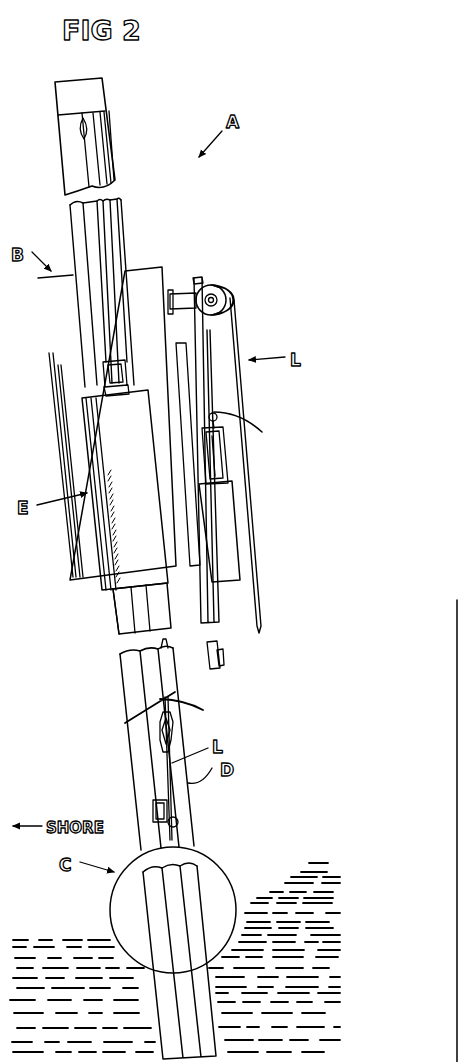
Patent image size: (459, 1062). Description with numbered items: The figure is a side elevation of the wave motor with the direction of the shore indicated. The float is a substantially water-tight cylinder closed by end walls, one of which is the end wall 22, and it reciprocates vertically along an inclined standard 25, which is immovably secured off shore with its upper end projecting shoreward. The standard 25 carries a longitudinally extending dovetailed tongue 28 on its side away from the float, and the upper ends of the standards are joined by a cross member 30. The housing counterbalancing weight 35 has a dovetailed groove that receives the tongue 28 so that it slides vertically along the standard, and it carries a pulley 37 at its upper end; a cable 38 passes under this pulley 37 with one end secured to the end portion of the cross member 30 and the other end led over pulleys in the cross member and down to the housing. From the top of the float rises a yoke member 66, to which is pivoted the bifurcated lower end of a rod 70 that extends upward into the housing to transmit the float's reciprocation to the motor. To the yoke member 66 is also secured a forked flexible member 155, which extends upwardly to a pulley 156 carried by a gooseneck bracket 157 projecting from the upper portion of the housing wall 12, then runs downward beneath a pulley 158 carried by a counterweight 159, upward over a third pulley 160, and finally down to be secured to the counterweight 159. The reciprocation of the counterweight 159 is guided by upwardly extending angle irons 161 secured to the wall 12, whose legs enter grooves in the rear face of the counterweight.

The cross member 30 is at (98, 90).
The cable 38 is at (98, 228).
The upwardly extending wall 12 is at (170, 275).
The third pulley 160 is at (196, 282).
The gooseneck bracket 157 is at (216, 296).
The pulley 156 is at (238, 297).
The pulley 37 is at (112, 378).
The weight 35 is at (112, 452).
The forked flexible member 155 is at (246, 440).
The pulley 158 is at (222, 458).
The counterweight 159 is at (231, 512).
The standard 25 is at (118, 600).
The dovetailed tongue 28 is at (138, 605).
The angle iron 161 is at (223, 652).
The rod 70 is at (157, 780).
The yoke member 66 is at (162, 837).
The end wall 22 is at (133, 895).